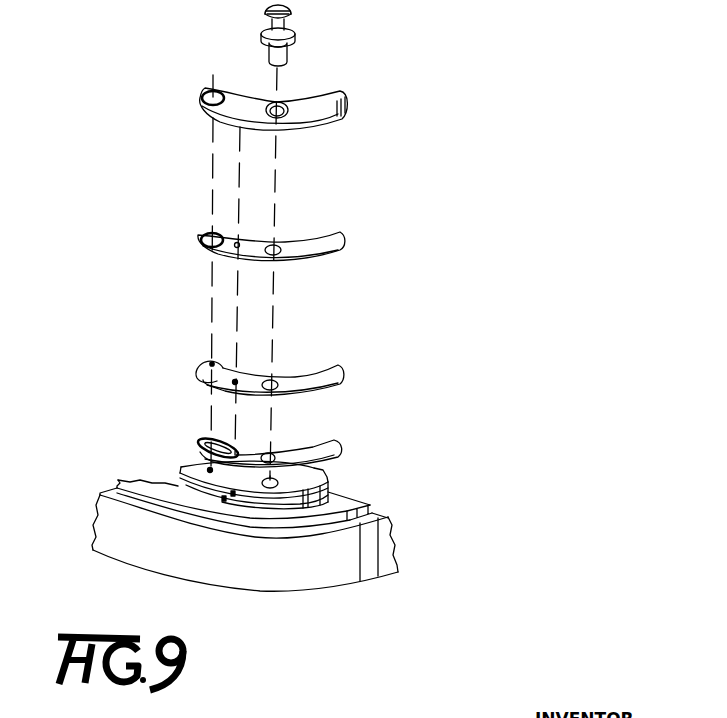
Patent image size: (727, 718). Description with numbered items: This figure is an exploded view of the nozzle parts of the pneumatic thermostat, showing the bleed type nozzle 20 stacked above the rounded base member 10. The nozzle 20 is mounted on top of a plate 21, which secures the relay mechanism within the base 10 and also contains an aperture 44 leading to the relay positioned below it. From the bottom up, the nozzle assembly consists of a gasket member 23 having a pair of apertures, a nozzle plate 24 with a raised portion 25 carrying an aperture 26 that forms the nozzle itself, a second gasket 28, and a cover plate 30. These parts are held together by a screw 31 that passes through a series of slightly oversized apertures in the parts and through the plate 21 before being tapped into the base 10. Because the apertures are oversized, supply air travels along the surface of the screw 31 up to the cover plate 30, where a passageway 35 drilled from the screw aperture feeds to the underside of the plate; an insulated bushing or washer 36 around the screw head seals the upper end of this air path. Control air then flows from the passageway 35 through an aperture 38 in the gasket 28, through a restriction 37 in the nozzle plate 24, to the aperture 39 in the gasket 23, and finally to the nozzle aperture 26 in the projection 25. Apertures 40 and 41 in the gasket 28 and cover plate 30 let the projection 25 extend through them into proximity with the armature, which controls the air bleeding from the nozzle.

The base member 10 is at (383, 551).
The nozzle 20 is at (74, 299).
The plate 21 is at (323, 488).
The gasket member 23 is at (330, 450).
The nozzle plate 24 is at (335, 372).
The raised portion 25 is at (200, 367).
The aperture 26 is at (212, 364).
The second gasket 28 is at (333, 240).
The cover plate 30 is at (335, 105).
The screw 31 is at (287, 58).
The passageway 35 is at (255, 112).
The insulated bushing member or washer 36 is at (295, 32).
The restriction 37 is at (236, 380).
The aperture 38 is at (239, 242).
The aperture 39 is at (200, 443).
The aperture 40 is at (208, 236).
The aperture 41 is at (202, 103).
The aperture 44 is at (208, 469).